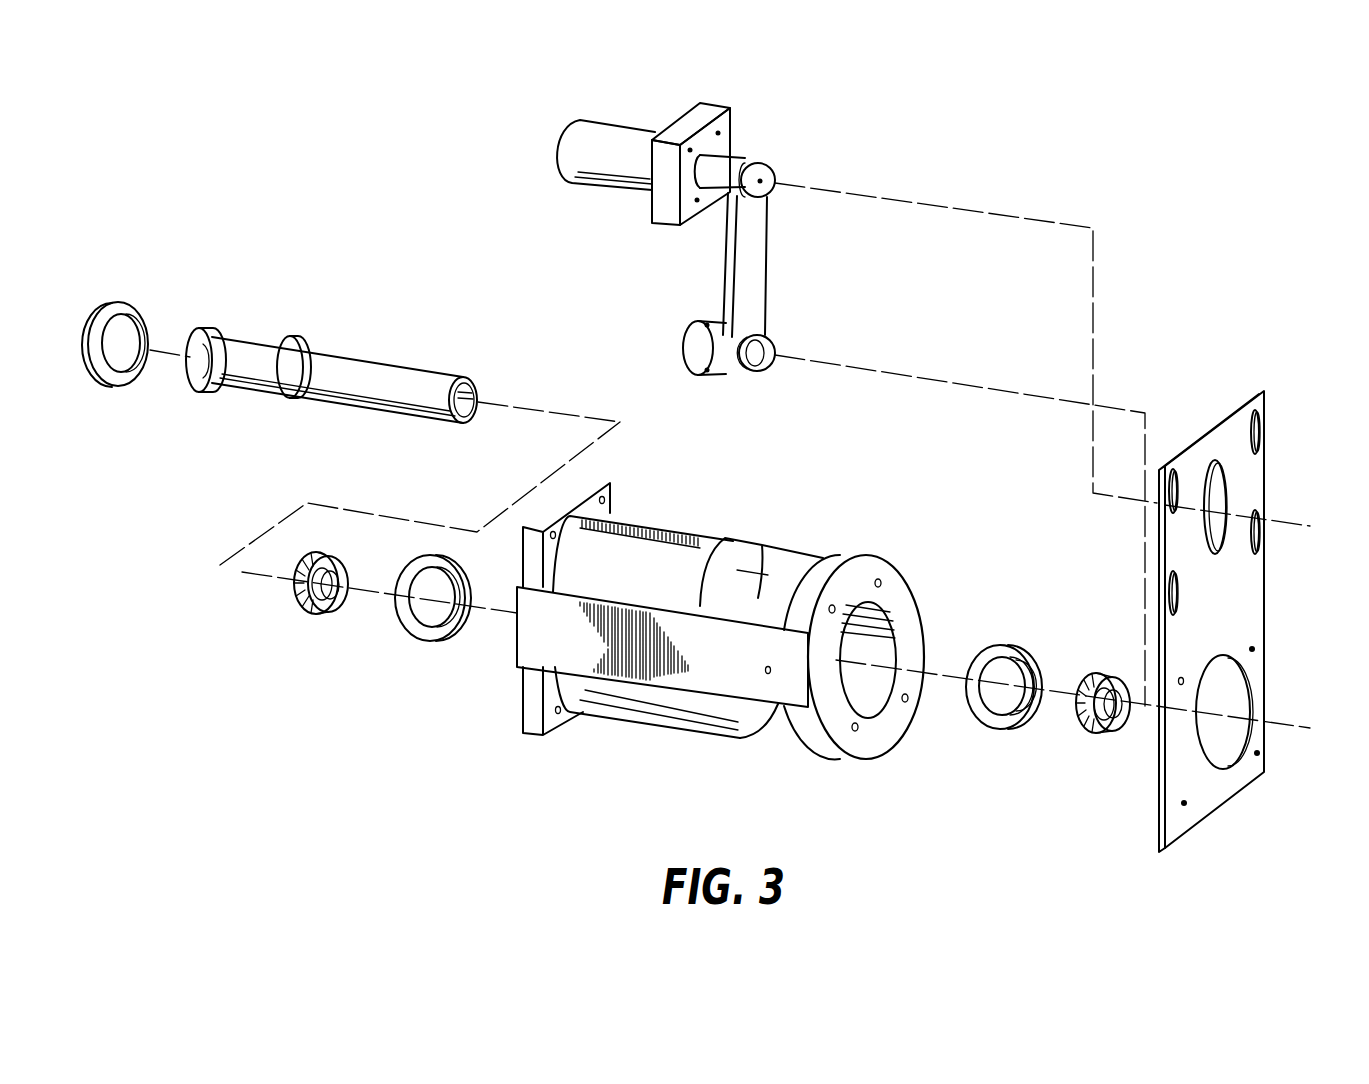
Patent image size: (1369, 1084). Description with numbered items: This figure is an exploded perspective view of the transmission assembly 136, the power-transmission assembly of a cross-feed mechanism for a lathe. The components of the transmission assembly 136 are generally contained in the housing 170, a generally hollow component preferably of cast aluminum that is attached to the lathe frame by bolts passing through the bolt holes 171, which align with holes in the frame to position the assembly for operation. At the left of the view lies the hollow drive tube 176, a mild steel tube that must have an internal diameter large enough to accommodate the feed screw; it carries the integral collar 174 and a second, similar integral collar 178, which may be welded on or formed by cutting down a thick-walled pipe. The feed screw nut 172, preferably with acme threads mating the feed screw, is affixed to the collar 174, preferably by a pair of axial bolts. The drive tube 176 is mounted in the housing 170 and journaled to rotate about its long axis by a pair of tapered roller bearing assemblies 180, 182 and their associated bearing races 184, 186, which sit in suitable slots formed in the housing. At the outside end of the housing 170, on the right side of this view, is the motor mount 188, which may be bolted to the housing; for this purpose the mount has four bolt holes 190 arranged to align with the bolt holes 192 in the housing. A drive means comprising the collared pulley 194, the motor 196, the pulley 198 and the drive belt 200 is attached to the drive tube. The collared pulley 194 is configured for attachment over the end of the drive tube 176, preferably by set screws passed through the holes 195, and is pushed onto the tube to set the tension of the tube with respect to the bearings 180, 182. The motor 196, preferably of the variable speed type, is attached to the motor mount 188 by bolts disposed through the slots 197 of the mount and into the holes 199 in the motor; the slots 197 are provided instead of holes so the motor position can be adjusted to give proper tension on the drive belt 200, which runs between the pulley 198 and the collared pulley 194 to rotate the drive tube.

The transmission assembly 136 is at (908, 128).
The housing 170 is at (695, 531).
The bolt holes 171 is at (606, 500).
The feed screw nut 172 is at (97, 378).
The integral collar 174 is at (194, 385).
The hollow drive tube 176 is at (259, 336).
The integral collar 178 is at (302, 340).
The tapered roller bearing assembly 180 is at (300, 604).
The tapered roller bearing assembly 182 is at (1094, 728).
The bearing race 184 is at (405, 625).
The bearing race 186 is at (990, 727).
The motor mount 188 is at (1256, 478).
The bolt holes 190 is at (1178, 680).
The bolt holes 192 is at (834, 605).
The collared pulley 194 is at (772, 342).
The holes 195 is at (707, 322).
The motor 196 is at (606, 122).
The slots 197 is at (1176, 468).
The pulley 198 is at (776, 162).
The holes 199 is at (720, 132).
The drive belt 200 is at (761, 273).